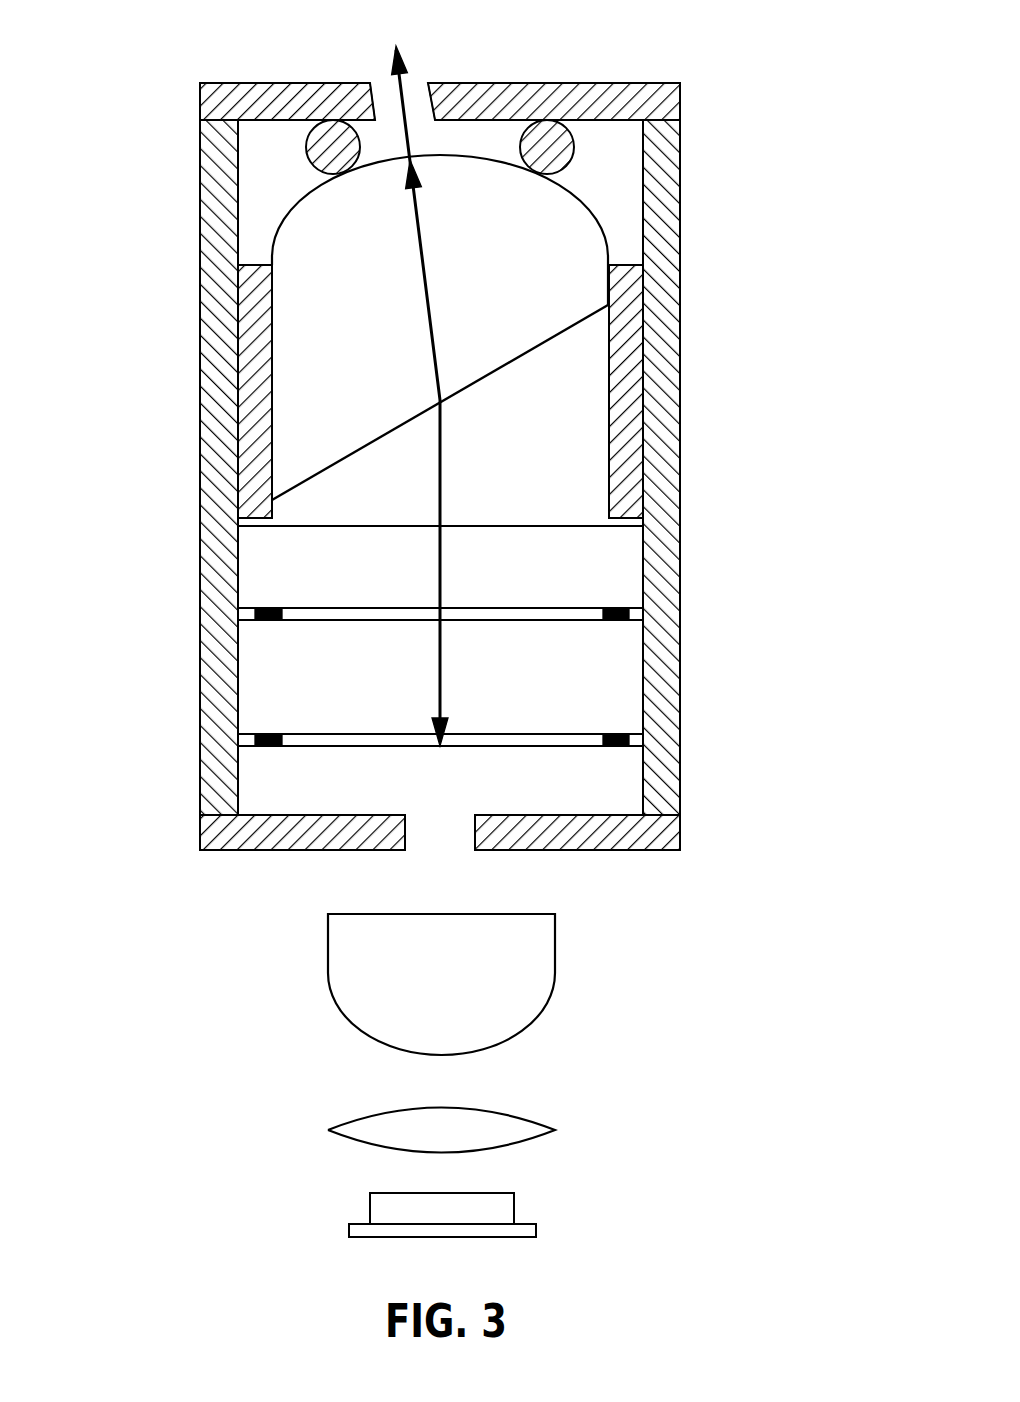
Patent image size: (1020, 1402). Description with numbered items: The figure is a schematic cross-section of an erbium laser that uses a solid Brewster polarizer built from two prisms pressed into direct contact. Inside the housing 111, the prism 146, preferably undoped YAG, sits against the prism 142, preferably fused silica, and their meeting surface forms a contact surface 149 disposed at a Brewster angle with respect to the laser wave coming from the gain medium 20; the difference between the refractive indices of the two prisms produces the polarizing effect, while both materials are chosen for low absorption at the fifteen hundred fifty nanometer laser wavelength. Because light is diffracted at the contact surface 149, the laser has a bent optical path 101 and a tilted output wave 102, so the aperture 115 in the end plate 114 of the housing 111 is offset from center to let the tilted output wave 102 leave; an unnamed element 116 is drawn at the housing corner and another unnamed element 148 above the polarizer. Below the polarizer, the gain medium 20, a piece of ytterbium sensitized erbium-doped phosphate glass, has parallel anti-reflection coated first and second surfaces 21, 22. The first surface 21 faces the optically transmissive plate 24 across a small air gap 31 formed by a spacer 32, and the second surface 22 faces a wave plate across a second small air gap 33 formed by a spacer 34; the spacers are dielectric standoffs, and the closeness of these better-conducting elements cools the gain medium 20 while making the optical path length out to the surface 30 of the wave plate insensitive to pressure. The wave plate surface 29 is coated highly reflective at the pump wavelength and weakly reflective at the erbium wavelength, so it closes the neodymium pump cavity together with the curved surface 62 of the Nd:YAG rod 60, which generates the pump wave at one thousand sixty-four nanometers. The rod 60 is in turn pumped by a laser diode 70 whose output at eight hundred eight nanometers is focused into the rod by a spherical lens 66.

The housing 111 is at (199, 206).
The end plate 114 is at (582, 84).
The housing cap 116 is at (672, 82).
The aperture 115 is at (413, 88).
The dome lens 148 is at (477, 157).
The prism 146 is at (550, 218).
The prism 142 is at (567, 395).
The contact surface 149 is at (567, 333).
The bent optical path 101 is at (427, 275).
The tilted output wave 102 is at (398, 86).
The surface of the wave plate 30 is at (250, 527).
The surface of the wave plate 29 is at (327, 607).
The second surface of the gain medium 22 is at (297, 620).
The spacer 34 is at (622, 607).
The second air gap 33 is at (557, 613).
The gain medium 20 is at (285, 672).
The first surface of the gain medium 21 is at (300, 733).
The spacer 32 is at (300, 742).
The air gap 31 is at (313, 740).
The optically transmissive plate 24 is at (617, 785).
The Nd:YAG rod 60 is at (525, 970).
The curved surface 62 is at (528, 1027).
The spherical lens 66 is at (555, 1130).
The laser diode 70 is at (538, 1225).